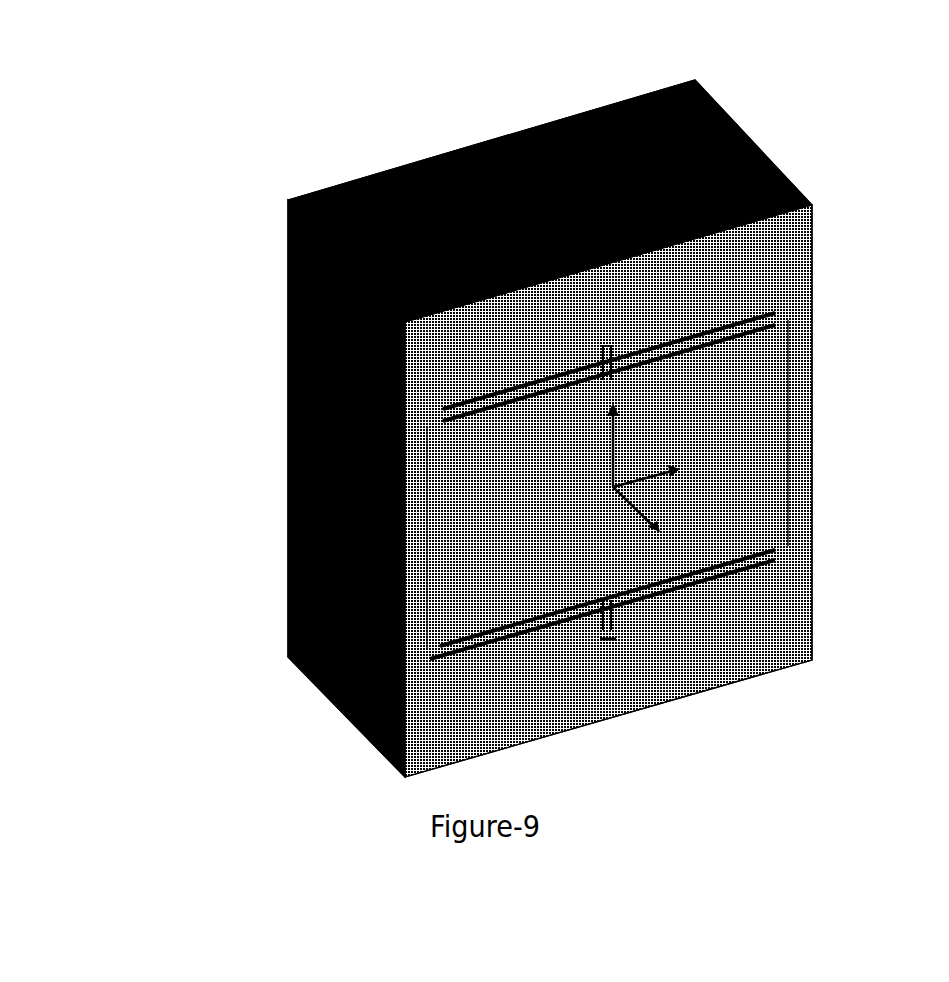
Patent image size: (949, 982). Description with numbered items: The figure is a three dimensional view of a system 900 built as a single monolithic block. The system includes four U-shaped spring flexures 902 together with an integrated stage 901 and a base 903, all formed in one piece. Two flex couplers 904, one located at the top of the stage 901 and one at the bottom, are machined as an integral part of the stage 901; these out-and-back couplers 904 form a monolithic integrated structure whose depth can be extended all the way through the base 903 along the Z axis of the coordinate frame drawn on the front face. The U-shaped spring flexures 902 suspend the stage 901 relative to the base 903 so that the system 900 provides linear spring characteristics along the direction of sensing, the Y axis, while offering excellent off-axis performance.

The system 900 is at (45, 23).
The stage 901 is at (475, 515).
The U-shaped spring flexures 902 is at (493, 138).
The base 903 is at (821, 606).
The flex couplers 904 is at (622, 342).